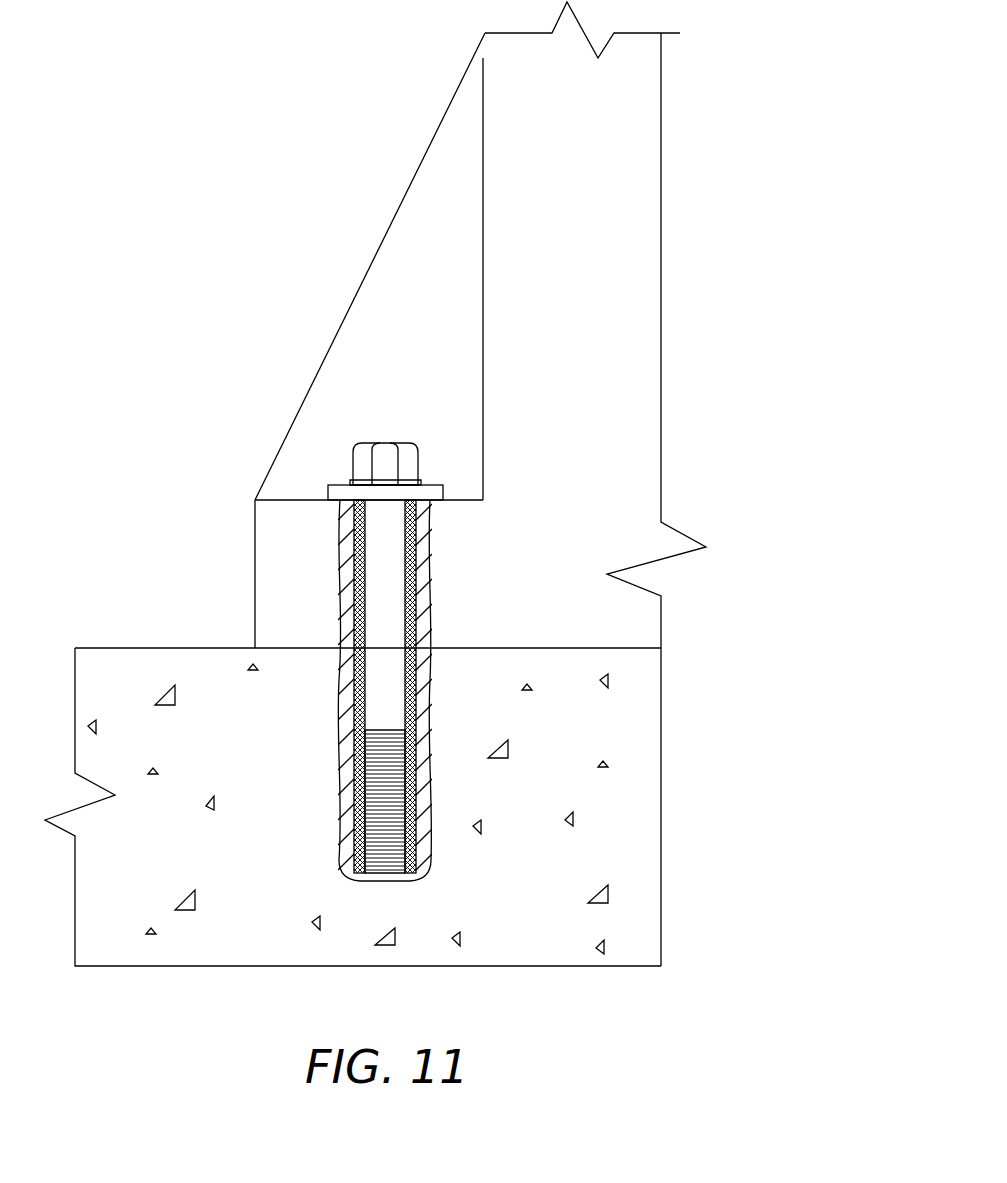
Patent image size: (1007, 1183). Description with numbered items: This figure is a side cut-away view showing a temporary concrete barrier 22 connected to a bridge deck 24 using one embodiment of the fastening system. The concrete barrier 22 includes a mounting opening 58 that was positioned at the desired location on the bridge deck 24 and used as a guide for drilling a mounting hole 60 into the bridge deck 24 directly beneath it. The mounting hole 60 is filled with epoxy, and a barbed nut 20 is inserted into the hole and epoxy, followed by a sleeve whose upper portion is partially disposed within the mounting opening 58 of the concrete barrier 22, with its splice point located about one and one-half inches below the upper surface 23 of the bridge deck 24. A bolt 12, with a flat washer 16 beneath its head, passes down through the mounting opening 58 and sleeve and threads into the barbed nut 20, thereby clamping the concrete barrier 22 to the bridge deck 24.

The bolt 12 is at (352, 452).
The flat washer 16 is at (330, 490).
The barbed nut 20 is at (358, 877).
The temporary concrete barrier 22 is at (596, 326).
The upper surface 23 is at (100, 648).
The bridge deck 24 is at (547, 853).
The mounting opening 58 is at (415, 535).
The mounting hole 60 is at (418, 695).